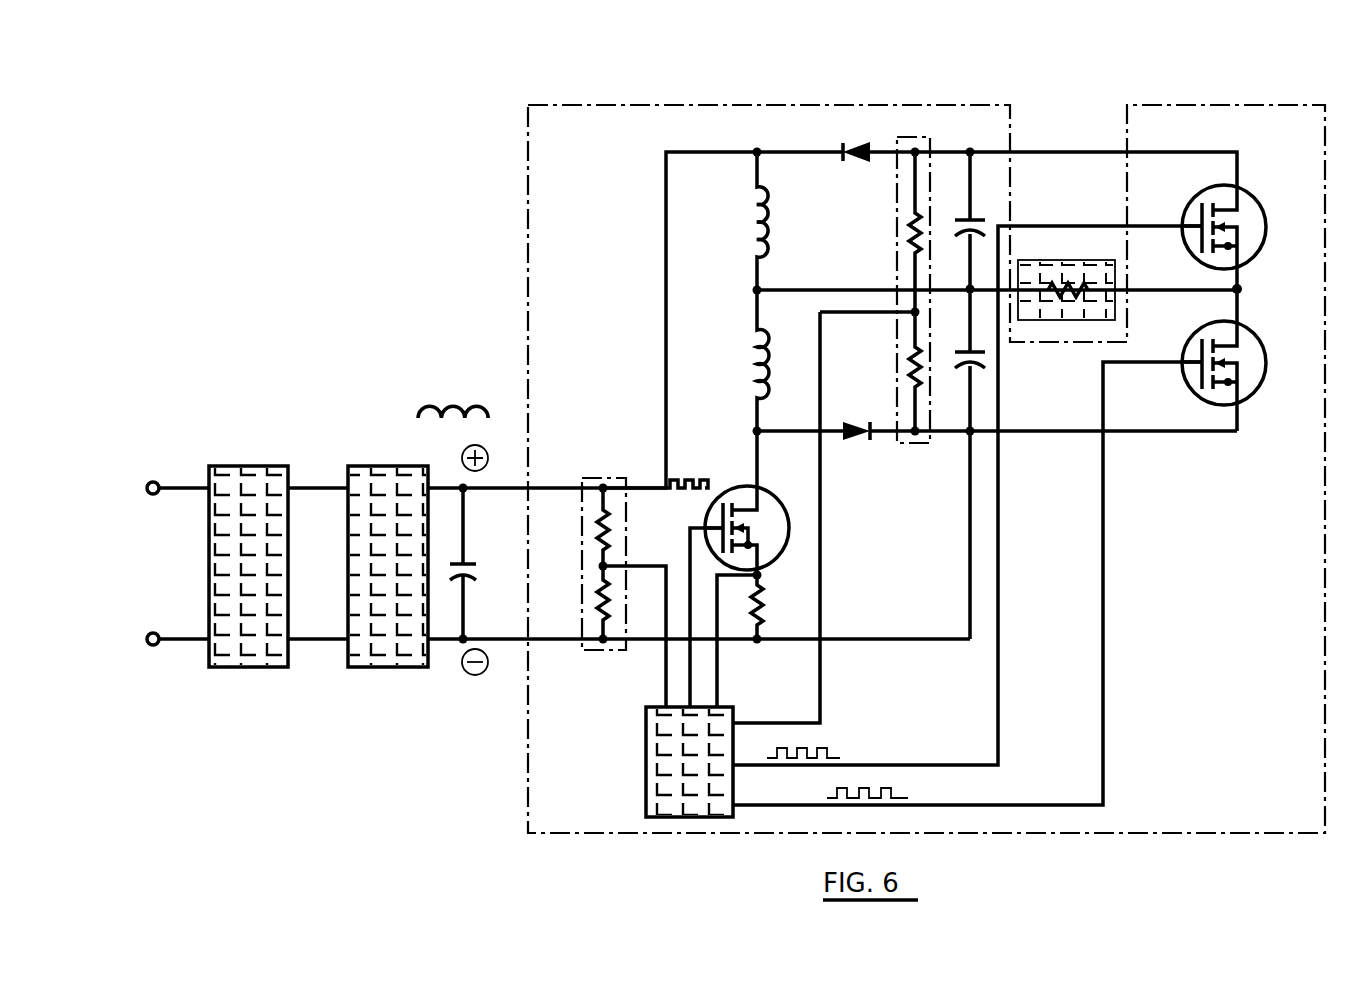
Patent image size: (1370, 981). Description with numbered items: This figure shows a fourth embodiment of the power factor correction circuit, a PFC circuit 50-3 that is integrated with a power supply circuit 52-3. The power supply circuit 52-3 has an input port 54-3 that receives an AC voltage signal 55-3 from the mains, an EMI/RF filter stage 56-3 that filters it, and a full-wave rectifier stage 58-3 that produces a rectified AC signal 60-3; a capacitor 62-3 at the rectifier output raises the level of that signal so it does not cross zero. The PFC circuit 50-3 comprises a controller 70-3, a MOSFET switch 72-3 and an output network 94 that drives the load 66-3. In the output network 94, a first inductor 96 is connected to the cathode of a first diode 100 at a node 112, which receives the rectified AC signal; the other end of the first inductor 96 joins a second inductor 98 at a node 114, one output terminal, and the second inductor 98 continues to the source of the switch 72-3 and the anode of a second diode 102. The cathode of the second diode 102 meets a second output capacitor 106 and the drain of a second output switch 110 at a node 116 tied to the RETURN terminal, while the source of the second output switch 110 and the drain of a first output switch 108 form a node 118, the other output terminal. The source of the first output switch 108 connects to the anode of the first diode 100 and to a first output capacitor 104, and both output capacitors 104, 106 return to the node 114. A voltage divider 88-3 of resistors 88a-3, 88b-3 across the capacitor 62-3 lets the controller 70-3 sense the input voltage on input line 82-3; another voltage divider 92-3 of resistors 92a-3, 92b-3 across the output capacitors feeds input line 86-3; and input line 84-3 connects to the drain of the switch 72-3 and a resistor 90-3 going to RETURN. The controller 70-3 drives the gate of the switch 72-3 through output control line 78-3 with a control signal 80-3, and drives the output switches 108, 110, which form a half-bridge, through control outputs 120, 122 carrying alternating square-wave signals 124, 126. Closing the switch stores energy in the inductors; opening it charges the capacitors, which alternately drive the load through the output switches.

The PFC circuit 50-3 is at (1290, 105).
The power supply circuit 52-3 is at (425, 744).
The input port 54-3 is at (156, 482).
The AC voltage signal 55-3 is at (78, 590).
The EMI/RF filter stage 56-3 is at (250, 466).
The full-wave rectifier stage 58-3 is at (368, 466).
The rectified AC signal 60-3 is at (455, 400).
The capacitor 62-3 is at (466, 578).
The load 66-3 is at (1042, 260).
The controller 70-3 is at (646, 777).
The switch 72-3 is at (775, 497).
The output control line 78-3 is at (690, 540).
The control signal 80-3 is at (688, 486).
The input line 82-3 is at (664, 672).
The input line 84-3 is at (717, 682).
The input line 86-3 is at (767, 723).
The voltage divider 88-3 is at (614, 478).
The resistor 88a-3 is at (598, 520).
The resistor 88b-3 is at (598, 622).
The resistor 90-3 is at (762, 615).
The voltage divider 92-3 is at (915, 140).
The resistor 92a-3 is at (908, 222).
The resistor 92b-3 is at (910, 366).
The output network 94 is at (740, 313).
The first inductor 96 is at (775, 222).
The second inductor 98 is at (776, 345).
The first diode 100 is at (849, 146).
The second diode 102 is at (853, 420).
The first output capacitor 104 is at (985, 222).
The second output capacitor 106 is at (986, 366).
The first output switch 108 is at (1245, 200).
The second output switch 110 is at (1258, 382).
The node 112 is at (757, 150).
The node 114 is at (968, 287).
The node 116 is at (992, 440).
The node 118 is at (1243, 289).
The first control output 120 is at (906, 765).
The second control output 122 is at (1018, 805).
The control signal 124 is at (835, 756).
The control signal 126 is at (912, 800).